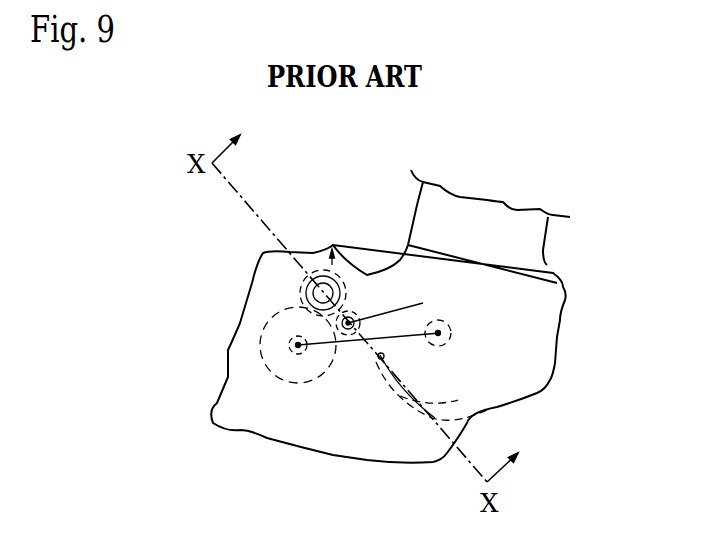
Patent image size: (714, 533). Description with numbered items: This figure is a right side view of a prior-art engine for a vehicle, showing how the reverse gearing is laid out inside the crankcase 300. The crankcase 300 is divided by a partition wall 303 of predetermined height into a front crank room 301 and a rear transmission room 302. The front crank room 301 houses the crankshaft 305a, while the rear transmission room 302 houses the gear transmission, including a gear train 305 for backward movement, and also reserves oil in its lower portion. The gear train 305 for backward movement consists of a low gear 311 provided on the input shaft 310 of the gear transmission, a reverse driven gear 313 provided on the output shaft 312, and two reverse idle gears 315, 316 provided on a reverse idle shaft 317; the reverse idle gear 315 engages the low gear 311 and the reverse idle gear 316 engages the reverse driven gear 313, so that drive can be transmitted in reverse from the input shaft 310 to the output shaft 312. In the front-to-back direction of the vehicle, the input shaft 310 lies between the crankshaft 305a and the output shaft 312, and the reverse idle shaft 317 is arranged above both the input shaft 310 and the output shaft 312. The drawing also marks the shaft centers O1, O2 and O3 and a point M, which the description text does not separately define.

The crankcase 300 is at (510, 403).
The front crank room 301 is at (485, 350).
The rear transmission room 302 is at (240, 357).
The partition wall 303 is at (402, 392).
The gear train for backward movement 305 is at (337, 243).
The crankshaft 305a is at (452, 334).
The input shaft 310 is at (354, 342).
The low gear 311 is at (361, 312).
The output shaft 312 is at (262, 387).
The reverse driven gear 313 is at (262, 334).
The reverse idle gear 315 is at (300, 290).
The reverse idle gear 316 is at (298, 266).
The reverse idle shaft 317 is at (313, 271).
The center point O1 is at (438, 346).
The center point O2 is at (308, 352).
The center point O3 is at (382, 316).
The point M is at (412, 338).